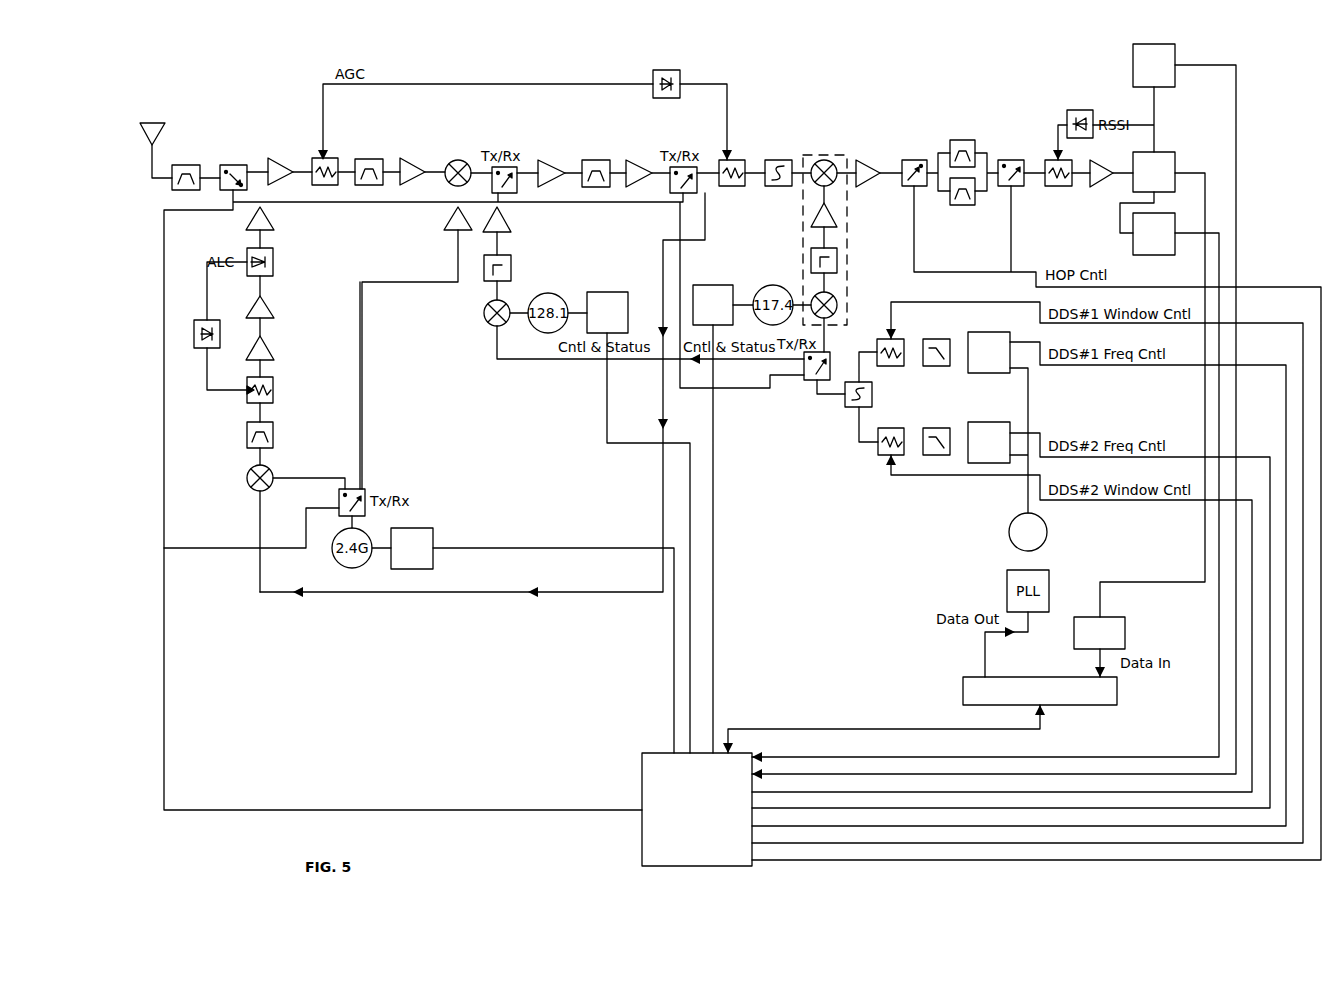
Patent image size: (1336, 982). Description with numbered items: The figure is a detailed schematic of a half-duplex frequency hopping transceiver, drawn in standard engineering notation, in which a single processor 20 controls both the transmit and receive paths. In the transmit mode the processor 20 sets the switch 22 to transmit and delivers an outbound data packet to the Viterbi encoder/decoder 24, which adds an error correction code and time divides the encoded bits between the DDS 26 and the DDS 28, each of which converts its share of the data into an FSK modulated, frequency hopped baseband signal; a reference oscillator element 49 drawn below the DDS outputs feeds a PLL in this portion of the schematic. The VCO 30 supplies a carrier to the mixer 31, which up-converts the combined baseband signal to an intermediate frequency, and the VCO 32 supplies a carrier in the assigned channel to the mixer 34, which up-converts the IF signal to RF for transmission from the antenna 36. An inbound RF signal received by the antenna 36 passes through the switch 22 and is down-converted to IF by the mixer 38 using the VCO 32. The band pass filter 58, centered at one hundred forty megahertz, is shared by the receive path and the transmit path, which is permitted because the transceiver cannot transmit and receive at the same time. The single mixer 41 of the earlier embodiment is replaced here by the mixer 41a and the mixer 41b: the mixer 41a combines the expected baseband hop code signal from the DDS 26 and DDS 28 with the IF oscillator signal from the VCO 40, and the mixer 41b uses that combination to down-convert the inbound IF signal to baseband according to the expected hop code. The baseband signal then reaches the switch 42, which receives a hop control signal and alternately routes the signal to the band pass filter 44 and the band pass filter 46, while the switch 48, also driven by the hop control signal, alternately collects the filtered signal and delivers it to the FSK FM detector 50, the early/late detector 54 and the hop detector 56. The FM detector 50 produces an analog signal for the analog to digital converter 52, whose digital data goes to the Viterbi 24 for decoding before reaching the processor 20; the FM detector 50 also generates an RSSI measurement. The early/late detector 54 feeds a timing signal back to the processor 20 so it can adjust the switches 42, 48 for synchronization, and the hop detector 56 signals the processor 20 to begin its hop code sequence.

The processor 20 is at (642, 792).
The switch 22 is at (222, 165).
The Viterbi encoder/decoder 24 is at (963, 702).
The DDS 26 is at (972, 332).
The DDS 28 is at (972, 422).
The VCO 30 is at (588, 292).
The mixer 31 is at (484, 316).
The VCO 32 is at (433, 541).
The mixer 34 is at (247, 481).
The antenna 36 is at (151, 128).
The mixer 38 is at (448, 163).
The VCO 40 is at (698, 285).
The mixer 41 is at (838, 155).
The mixer 41a is at (838, 306).
The mixer 41b is at (818, 156).
The switch 42 is at (908, 160).
The band pass filter 44 is at (975, 150).
The band pass filter 46 is at (970, 205).
The switch 48 is at (1014, 186).
The oscillator 49 is at (1028, 532).
The FSK FM detector 50 is at (1175, 164).
The analog to digital converter 52 is at (1125, 642).
The early/late detector 54 is at (1133, 81).
The hop detector 56 is at (1133, 249).
The 140 MHz band pass filter 58 is at (582, 168).